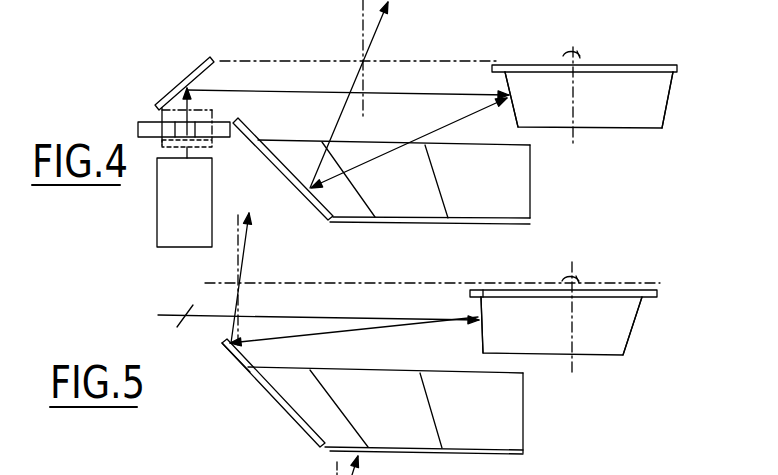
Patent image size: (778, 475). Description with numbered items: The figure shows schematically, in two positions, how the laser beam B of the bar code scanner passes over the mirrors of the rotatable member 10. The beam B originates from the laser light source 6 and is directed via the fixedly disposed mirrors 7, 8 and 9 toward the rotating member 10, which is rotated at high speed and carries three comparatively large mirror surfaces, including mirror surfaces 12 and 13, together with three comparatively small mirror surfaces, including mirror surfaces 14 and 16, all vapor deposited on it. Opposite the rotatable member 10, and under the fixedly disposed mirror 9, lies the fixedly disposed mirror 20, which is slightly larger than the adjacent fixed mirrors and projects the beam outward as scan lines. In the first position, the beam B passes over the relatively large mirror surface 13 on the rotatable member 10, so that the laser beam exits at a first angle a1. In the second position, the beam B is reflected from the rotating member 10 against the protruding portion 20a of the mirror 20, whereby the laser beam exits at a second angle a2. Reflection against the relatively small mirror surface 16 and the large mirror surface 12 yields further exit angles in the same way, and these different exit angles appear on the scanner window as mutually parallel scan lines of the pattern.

In FIG. 4, the laser light source 6 is at (168, 193).
In FIG. 4, the fixedly disposed mirror 7 is at (157, 152).
In FIG. 4, the fixedly disposed mirror 8 is at (193, 127).
In FIG. 4, the fixedly disposed mirror 9 is at (187, 88).
In FIG. 4, the rotating member 10 is at (610, 129).
In FIG. 5, the rotating member 10 is at (585, 355).
In FIG. 5, the comparatively large mirror surface 12 is at (627, 332).
In FIG. 4, the comparatively large mirror surface 13 is at (513, 103).
In FIG. 5, the comparatively small mirror surface 14 is at (481, 322).
In FIG. 4, the comparatively small mirror surface 16 is at (676, 100).
In FIG. 4, the fixedly disposed mirror 20 is at (302, 181).
In FIG. 5, the fixedly disposed mirror 20 is at (280, 405).
In FIG. 5, the protruding portion of mirror 20a is at (232, 358).
In FIG. 4, the first exit angle a1 is at (367, 42).
In FIG. 5, the second exit angle a2 is at (242, 262).
In FIG. 4, the laser beam B is at (270, 90).
In FIG. 5, the laser beam B is at (283, 315).